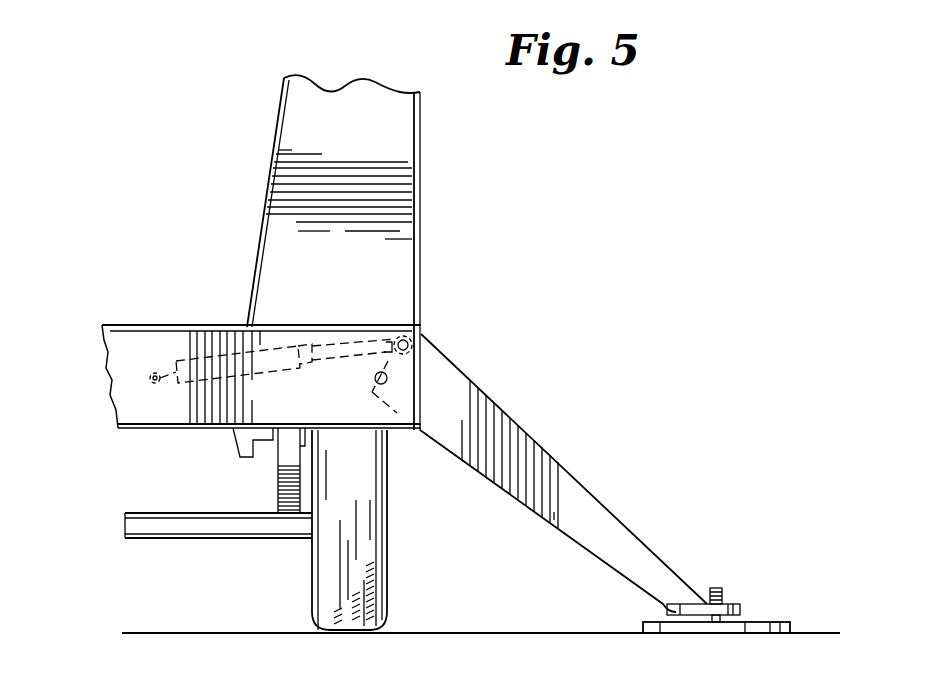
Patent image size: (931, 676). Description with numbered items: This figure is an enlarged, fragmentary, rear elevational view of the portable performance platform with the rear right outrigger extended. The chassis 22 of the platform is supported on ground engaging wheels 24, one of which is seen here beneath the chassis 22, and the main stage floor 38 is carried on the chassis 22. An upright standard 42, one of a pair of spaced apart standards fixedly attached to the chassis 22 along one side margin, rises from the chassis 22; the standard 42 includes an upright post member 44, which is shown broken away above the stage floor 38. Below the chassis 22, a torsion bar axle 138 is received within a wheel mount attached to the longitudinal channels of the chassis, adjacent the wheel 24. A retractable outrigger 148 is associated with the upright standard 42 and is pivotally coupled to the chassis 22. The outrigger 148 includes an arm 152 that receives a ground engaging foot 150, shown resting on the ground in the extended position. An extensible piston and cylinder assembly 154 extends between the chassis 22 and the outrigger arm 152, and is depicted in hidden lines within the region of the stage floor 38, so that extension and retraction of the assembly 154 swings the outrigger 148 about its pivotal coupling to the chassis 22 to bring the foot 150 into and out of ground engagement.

The chassis 22 is at (406, 442).
The ground engaging wheels 24 is at (343, 553).
The main stage floor 38 is at (140, 325).
The upright standard 42 is at (398, 251).
The upright post member 44 is at (297, 214).
The torsion bar axle 138 is at (205, 513).
The retractable outrigger 148 is at (588, 463).
The ground engaging foot 150 is at (762, 622).
The outrigger arm 152 is at (610, 524).
The extensible piston and cylinder assembly 154 is at (172, 393).